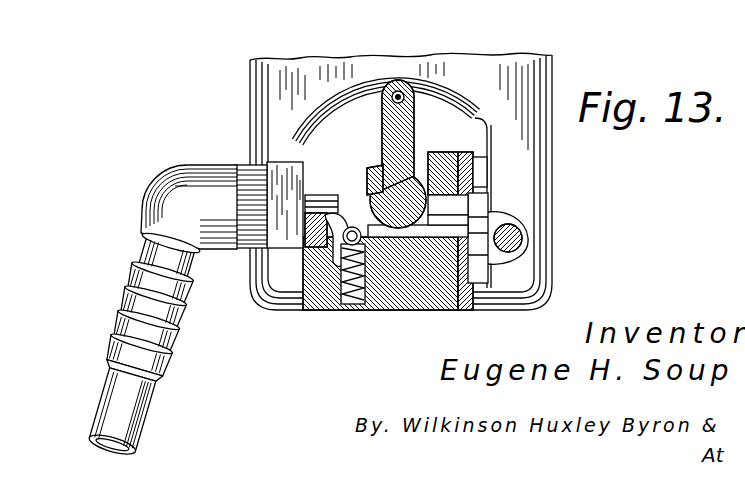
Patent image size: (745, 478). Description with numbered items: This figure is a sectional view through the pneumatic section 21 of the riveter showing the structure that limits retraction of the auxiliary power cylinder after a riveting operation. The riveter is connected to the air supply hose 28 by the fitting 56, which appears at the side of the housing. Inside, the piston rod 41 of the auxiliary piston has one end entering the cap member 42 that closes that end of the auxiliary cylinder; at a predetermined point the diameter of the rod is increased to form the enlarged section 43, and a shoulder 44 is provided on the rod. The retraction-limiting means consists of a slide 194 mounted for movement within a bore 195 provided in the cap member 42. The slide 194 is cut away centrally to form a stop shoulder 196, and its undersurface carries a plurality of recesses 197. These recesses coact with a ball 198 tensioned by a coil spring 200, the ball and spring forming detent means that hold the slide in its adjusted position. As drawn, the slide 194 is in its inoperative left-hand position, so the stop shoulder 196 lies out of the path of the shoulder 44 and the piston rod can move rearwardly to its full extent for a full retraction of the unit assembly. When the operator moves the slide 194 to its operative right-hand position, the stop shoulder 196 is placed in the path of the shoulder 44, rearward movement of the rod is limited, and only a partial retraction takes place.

The pneumatic section 21 is at (272, 62).
The air supply hose 28 is at (108, 376).
The piston rod 41 is at (447, 149).
The cap member 42 is at (417, 293).
The enlarged section 43 is at (373, 170).
The shoulder 44 is at (418, 140).
The fitting 56 is at (188, 168).
The slide 194 is at (445, 211).
The bore 195 is at (482, 218).
The stop shoulder 196 is at (345, 183).
The recesses 197 is at (338, 240).
The ball 198 is at (323, 277).
The coil spring 200 is at (350, 283).